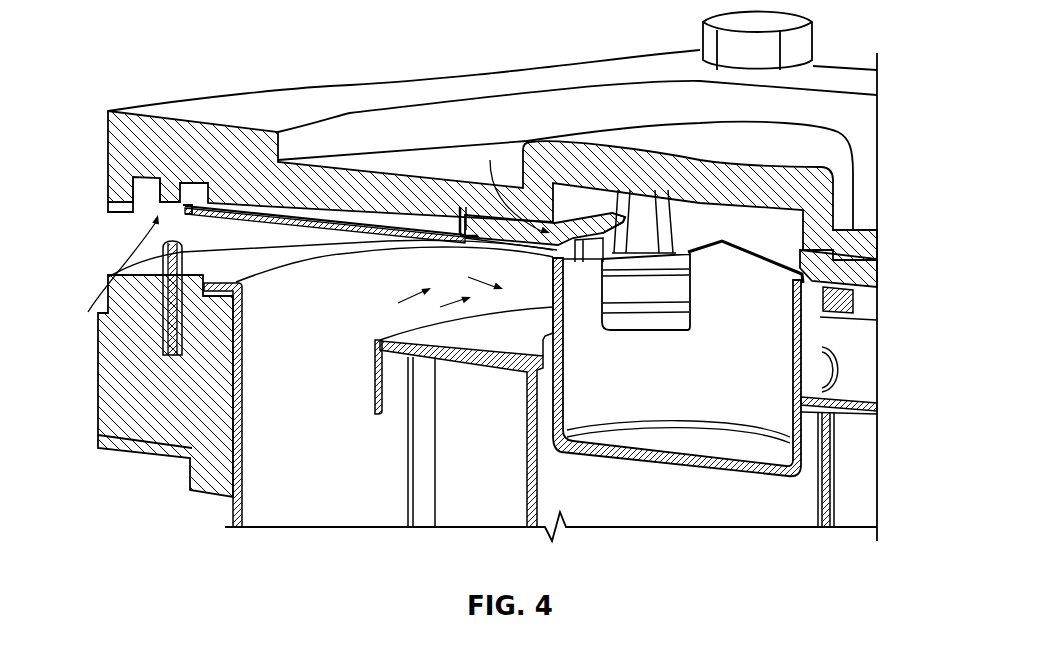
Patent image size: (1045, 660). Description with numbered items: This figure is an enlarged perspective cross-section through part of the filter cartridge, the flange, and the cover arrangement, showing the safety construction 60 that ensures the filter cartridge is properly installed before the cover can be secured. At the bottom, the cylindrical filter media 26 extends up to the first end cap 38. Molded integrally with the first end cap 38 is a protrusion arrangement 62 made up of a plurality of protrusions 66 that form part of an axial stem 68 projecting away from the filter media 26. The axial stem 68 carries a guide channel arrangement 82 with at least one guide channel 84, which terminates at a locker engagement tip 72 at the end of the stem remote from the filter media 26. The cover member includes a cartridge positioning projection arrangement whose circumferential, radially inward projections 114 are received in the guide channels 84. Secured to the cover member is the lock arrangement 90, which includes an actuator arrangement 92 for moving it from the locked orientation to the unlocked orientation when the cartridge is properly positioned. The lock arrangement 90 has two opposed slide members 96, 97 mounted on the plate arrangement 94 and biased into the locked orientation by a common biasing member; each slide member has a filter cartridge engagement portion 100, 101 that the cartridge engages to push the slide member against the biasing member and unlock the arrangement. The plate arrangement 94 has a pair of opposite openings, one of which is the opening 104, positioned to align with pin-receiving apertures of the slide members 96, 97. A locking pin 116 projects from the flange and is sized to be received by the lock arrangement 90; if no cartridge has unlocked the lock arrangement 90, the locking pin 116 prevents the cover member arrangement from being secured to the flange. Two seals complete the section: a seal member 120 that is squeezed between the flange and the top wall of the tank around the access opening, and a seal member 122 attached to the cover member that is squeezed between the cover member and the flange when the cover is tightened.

The safety construction 60 is at (110, 68).
The seal member 122 is at (140, 209).
The lock arrangement 90 is at (303, 235).
The plate arrangement 94 is at (263, 218).
The slide member 96 is at (300, 218).
The opening 104 is at (176, 208).
The locking pin 116 is at (90, 322).
The seal member 120 is at (135, 453).
The first end cap 38 is at (378, 404).
The filter media 26 is at (443, 457).
The protrusion arrangement 62 is at (399, 302).
The protrusions 66 is at (470, 278).
The axial stem 68 is at (439, 311).
The filter cartridge engagement portion 100 is at (567, 247).
The actuator arrangement 92 is at (613, 215).
The radially inward projections 114 is at (650, 215).
The guide channel arrangement 82 is at (668, 346).
The locker engagement tip 72 is at (554, 258).
The guide channel 84 is at (604, 290).
The filter cartridge engagement portion 101 is at (795, 278).
The slide member 97 is at (868, 277).